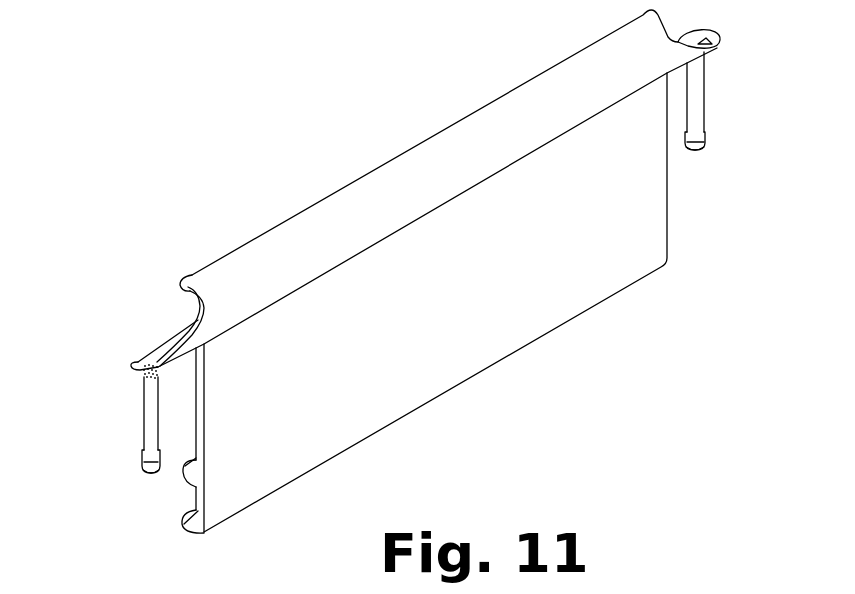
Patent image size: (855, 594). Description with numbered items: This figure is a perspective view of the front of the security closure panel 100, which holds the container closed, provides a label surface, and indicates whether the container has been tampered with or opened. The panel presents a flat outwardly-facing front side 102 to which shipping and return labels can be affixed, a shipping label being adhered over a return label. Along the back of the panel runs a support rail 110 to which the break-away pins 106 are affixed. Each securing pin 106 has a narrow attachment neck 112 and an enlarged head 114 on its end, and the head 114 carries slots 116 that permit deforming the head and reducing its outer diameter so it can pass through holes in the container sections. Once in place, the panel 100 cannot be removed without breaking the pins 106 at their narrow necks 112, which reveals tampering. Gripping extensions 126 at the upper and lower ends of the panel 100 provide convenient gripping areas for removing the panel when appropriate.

The security closure panel 100 is at (417, 296).
The front side 102 is at (418, 385).
The break-away pins 106 is at (150, 399).
The support rail 110 is at (140, 363).
The narrow attachment neck 112 is at (140, 382).
The enlarged head 114 is at (152, 474).
The slots 116 is at (142, 458).
The gripping extension 126 is at (222, 273).